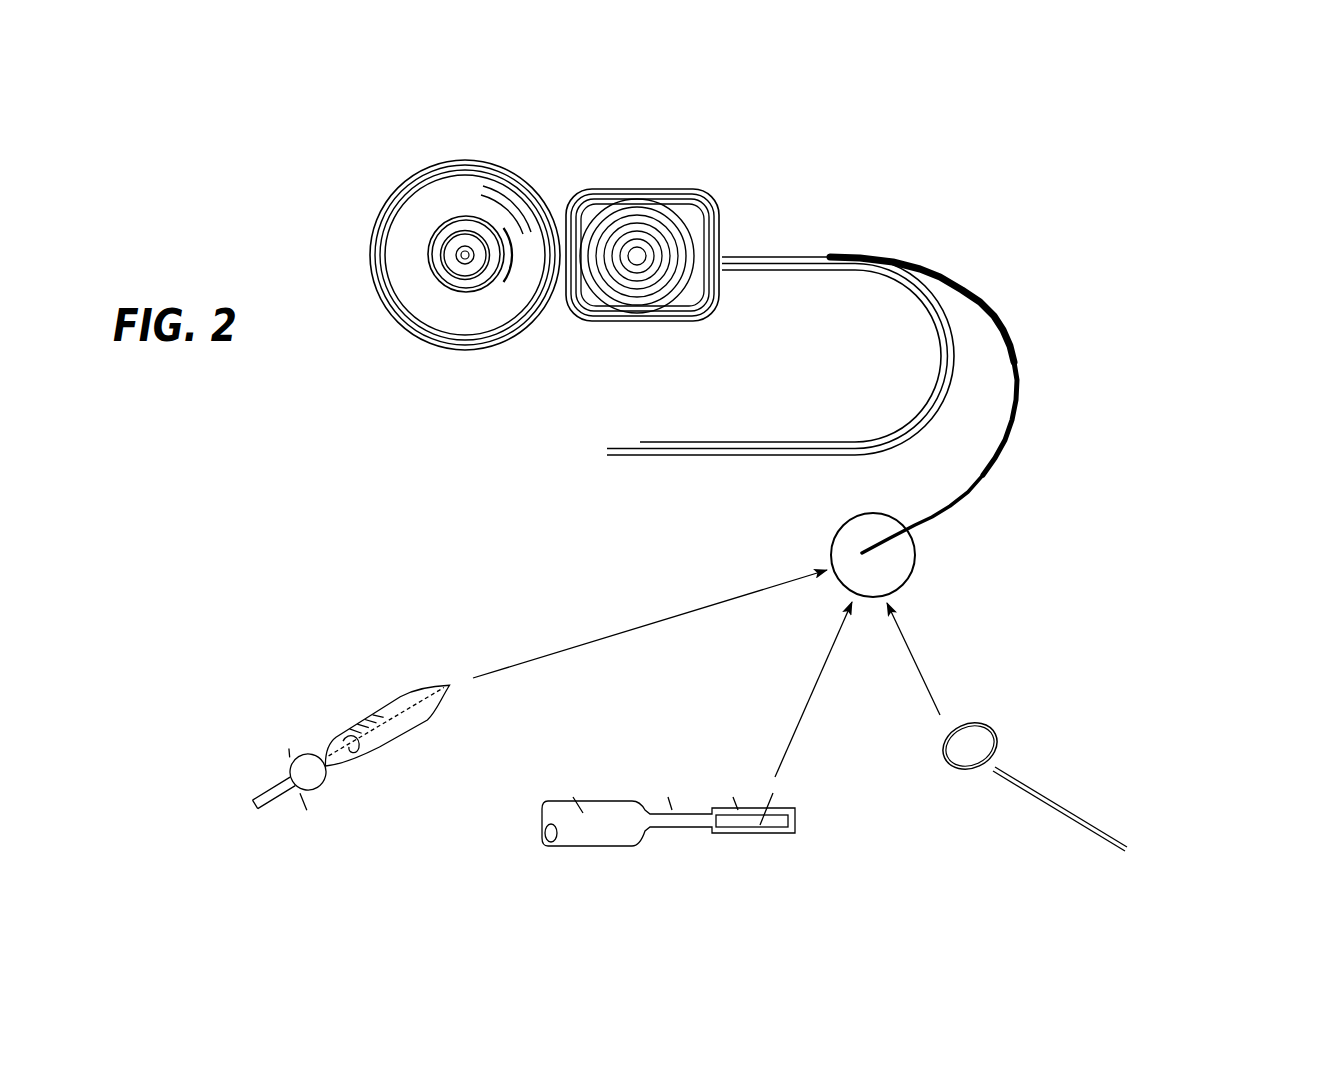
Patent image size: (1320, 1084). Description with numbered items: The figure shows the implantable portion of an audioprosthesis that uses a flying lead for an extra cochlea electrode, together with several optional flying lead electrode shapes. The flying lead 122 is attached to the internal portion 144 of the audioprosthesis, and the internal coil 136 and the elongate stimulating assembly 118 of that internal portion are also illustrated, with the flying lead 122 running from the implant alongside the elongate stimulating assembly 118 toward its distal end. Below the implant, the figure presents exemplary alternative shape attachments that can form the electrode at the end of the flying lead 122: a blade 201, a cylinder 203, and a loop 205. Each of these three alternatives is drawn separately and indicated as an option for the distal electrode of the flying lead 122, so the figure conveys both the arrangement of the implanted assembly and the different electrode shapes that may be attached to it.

The elongate stimulating assembly 118 is at (835, 448).
The flying lead 122 is at (1006, 328).
The internal coil 136 is at (512, 197).
The internal portion 144 is at (828, 202).
The blade 201 is at (372, 708).
The cylinder 203 is at (670, 860).
The loop 205 is at (1048, 785).